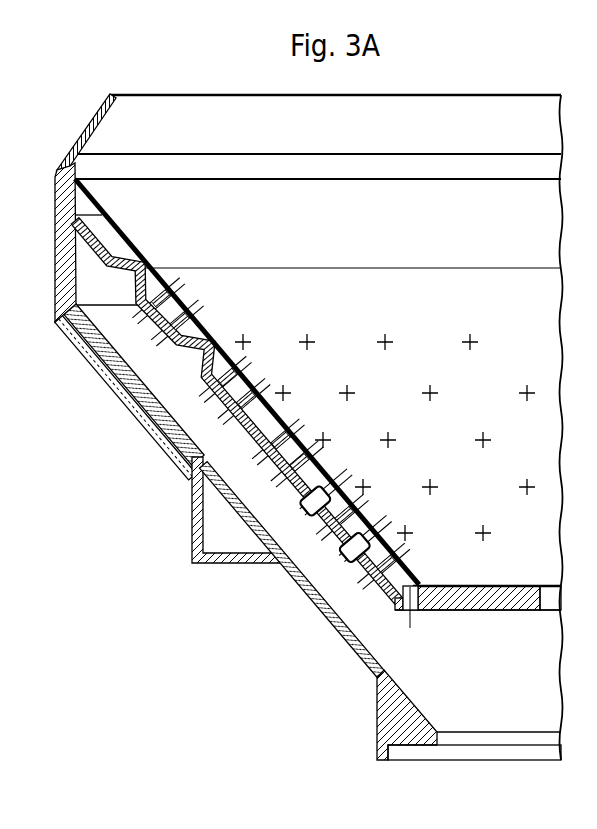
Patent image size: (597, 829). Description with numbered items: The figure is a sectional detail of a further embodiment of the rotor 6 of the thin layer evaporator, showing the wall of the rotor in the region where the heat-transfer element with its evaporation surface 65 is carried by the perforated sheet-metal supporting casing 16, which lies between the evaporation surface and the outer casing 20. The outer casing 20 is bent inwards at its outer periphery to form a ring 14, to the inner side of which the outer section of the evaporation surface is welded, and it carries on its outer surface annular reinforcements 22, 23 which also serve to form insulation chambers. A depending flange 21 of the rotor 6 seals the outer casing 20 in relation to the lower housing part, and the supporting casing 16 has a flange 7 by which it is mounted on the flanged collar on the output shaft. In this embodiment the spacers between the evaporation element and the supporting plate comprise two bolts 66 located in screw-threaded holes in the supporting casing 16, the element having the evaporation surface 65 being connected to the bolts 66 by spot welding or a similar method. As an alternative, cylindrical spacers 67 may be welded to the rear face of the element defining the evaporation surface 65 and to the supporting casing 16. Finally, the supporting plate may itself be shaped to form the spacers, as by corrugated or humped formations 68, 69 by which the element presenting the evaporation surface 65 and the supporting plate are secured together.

The rotor 6 is at (310, 427).
The flange 7 is at (483, 611).
The ring 14 is at (100, 208).
The supporting casing 16 is at (285, 468).
The outer casing 20 is at (362, 660).
The depending flange 21 is at (377, 732).
The annular reinforcement 22 is at (173, 468).
The lower annular reinforcement 23 is at (225, 563).
The evaporation surface 65 is at (165, 330).
The bolts 66 is at (313, 513).
The cylindrical spacers 67 is at (290, 438).
The corrugated or humped formation 68 is at (178, 365).
The corrugated or humped formation 69 is at (127, 278).